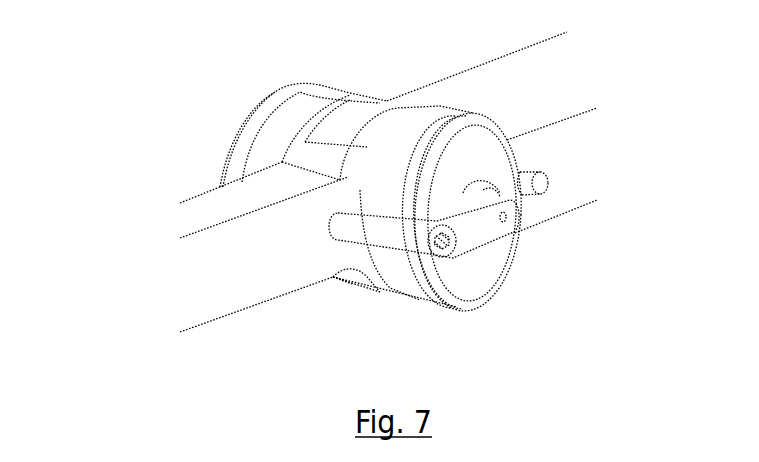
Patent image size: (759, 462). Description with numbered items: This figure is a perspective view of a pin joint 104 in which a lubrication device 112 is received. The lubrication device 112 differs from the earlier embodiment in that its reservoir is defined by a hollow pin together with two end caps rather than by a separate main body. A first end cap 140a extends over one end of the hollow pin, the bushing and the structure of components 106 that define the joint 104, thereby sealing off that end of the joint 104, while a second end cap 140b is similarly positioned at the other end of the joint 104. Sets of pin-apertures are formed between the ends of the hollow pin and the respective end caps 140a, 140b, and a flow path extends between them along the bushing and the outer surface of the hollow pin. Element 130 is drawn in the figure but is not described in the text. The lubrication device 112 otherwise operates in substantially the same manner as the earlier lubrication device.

The pin joint 104 is at (366, 180).
The structure of components 106 is at (518, 78).
The lubrication device 112 is at (371, 180).
The pin 130 is at (457, 233).
The first end cap 140a is at (518, 211).
The second end cap 140b is at (247, 130).